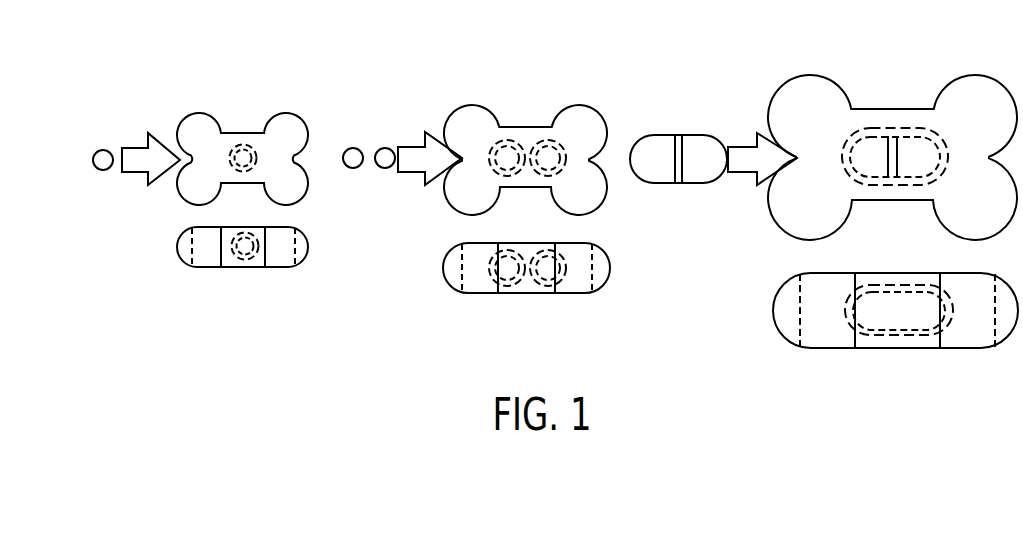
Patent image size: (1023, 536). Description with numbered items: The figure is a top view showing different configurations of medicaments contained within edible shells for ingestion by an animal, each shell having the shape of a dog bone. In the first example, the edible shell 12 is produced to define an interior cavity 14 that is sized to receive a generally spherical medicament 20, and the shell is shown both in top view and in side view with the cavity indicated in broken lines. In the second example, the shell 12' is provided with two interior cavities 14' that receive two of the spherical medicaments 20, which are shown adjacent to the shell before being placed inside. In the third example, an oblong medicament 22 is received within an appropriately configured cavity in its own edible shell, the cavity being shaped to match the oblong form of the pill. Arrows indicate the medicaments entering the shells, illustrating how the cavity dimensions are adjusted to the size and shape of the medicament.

The edible shell 12 is at (198, 114).
The shell 12′ is at (463, 105).
The interior cavity 14 is at (247, 145).
The interior cavities 14′ is at (540, 141).
The spherical medicament 20 is at (103, 153).
The oblong medicament 22 is at (662, 148).